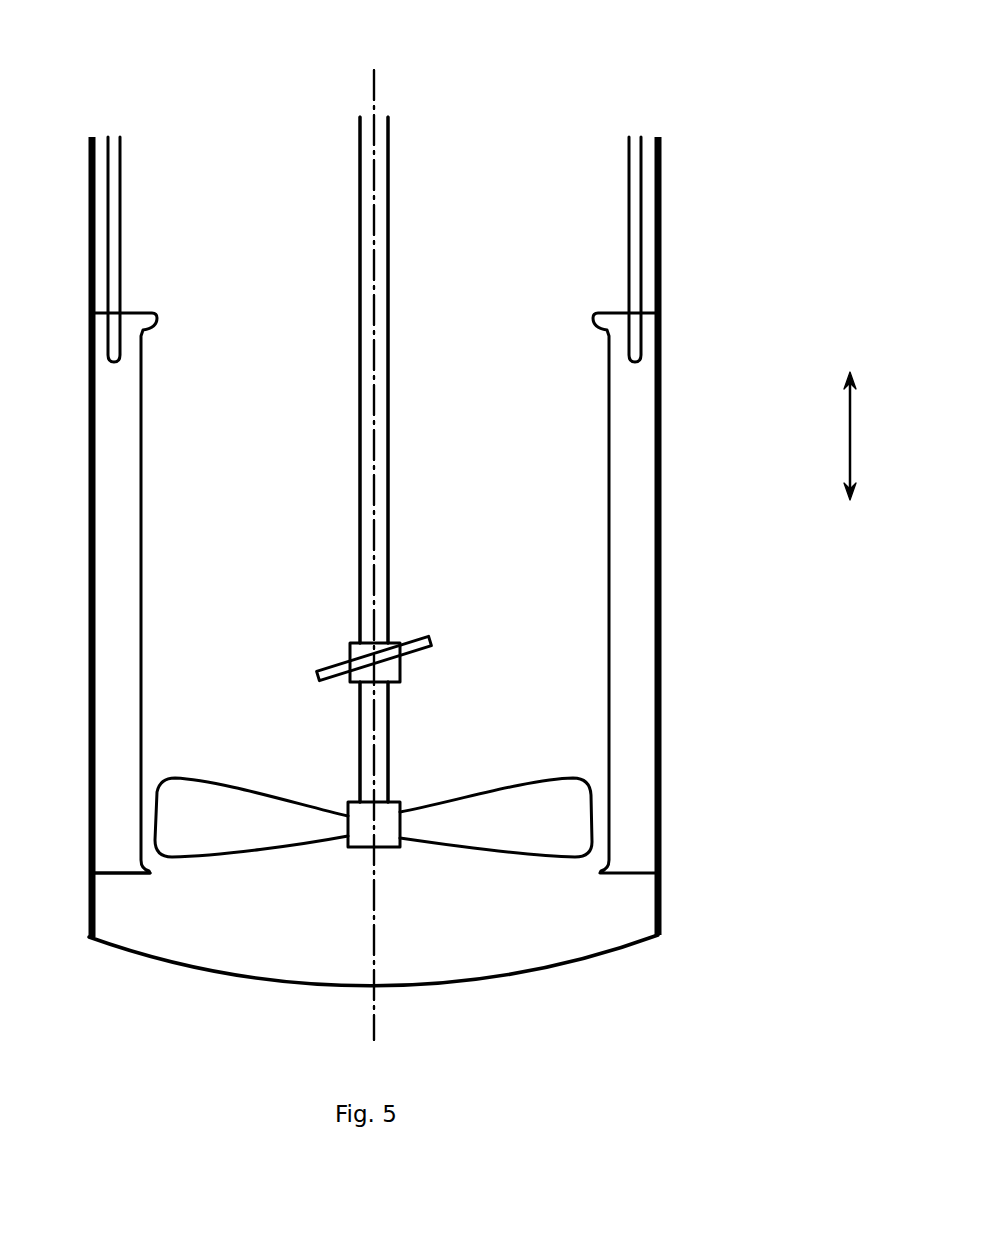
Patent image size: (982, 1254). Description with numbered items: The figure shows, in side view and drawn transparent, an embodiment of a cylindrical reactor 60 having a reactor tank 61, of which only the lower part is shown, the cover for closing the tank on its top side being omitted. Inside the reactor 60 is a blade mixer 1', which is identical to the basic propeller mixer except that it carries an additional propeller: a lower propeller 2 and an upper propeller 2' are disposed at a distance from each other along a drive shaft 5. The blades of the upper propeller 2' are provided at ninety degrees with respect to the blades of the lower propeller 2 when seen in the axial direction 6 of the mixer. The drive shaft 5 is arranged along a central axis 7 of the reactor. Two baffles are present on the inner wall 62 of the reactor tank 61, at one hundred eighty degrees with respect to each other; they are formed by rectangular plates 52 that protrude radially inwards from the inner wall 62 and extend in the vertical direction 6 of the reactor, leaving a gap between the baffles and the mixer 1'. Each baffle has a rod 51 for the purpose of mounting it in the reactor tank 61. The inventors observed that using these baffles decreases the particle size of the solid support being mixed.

The blade mixer 1' is at (443, 555).
The propeller 2 is at (373, 762).
The propeller 2' is at (429, 589).
The drive shaft 5 is at (380, 272).
The axial direction 6 is at (852, 436).
The axis of rotation 7 is at (374, 72).
The rod 51 is at (113, 243).
The rectangular plate 52 is at (110, 580).
The cylindrical reactor 60 is at (747, 218).
The reactor tank 61 is at (607, 957).
The inner wall 62 is at (101, 891).